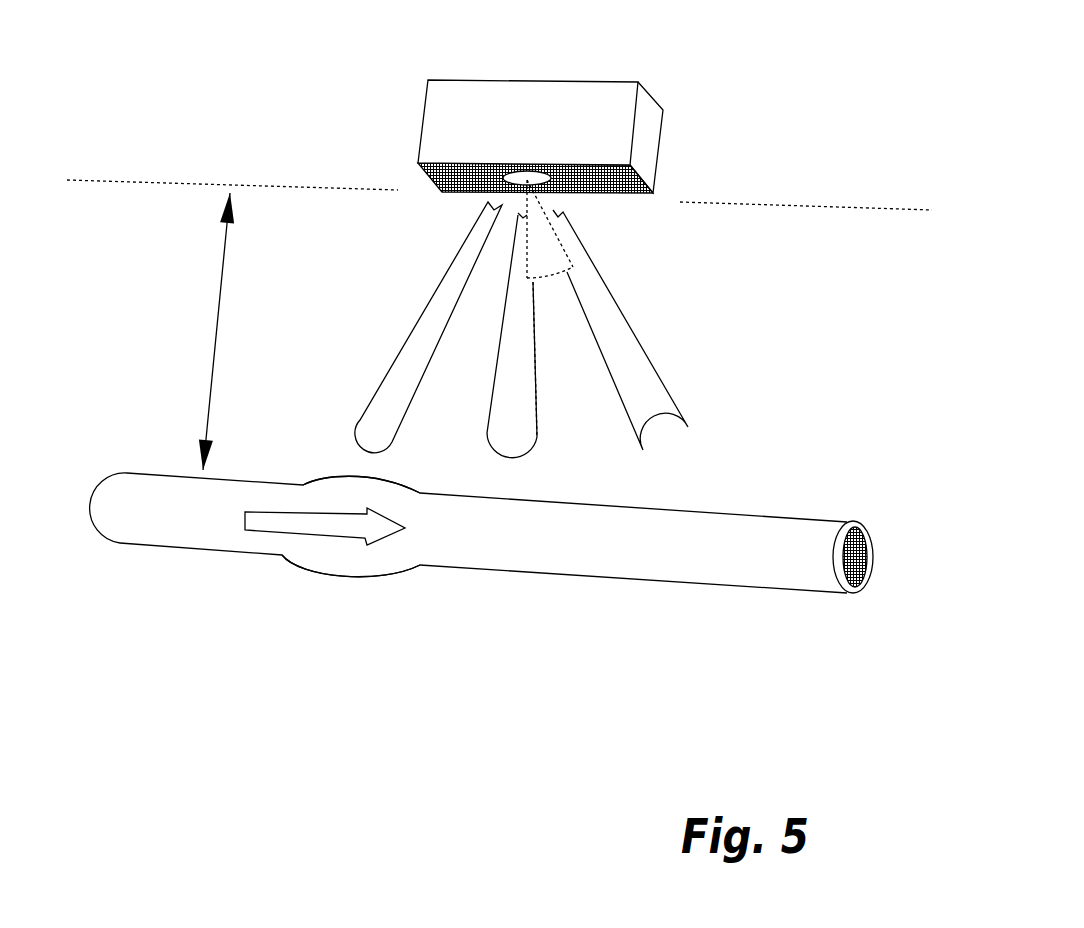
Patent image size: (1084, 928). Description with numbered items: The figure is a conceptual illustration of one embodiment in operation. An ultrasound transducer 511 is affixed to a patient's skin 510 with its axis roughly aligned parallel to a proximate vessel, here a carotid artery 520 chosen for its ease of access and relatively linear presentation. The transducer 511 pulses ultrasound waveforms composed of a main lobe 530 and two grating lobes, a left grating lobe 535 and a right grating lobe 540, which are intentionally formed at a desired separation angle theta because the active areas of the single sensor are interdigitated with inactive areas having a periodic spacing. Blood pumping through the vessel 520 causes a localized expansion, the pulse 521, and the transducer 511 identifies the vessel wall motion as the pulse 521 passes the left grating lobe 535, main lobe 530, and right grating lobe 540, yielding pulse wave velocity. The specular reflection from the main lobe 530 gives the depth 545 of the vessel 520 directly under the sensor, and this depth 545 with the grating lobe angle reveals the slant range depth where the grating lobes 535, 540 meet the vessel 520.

The skin 510 is at (147, 183).
The ultrasound transducer 511 is at (663, 118).
The carotid artery 520 is at (213, 553).
The pulse 521 is at (377, 600).
The main lobe 530 is at (538, 420).
The left grating lobe 535 is at (430, 292).
The right grating lobe 540 is at (613, 297).
The depth 545 is at (212, 355).